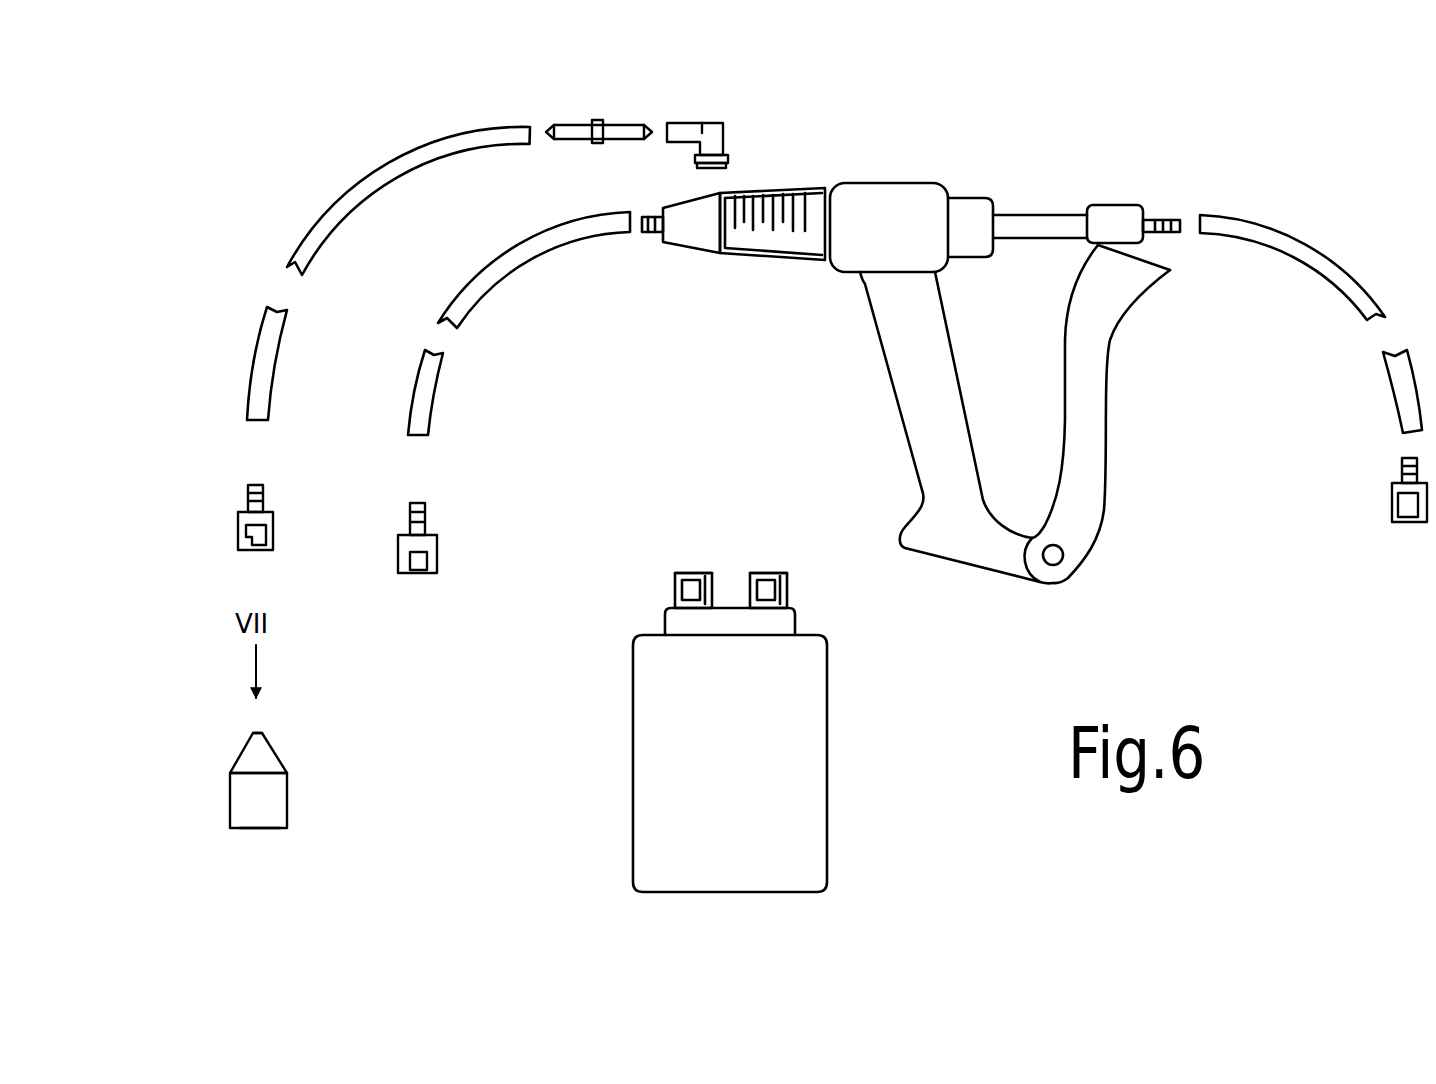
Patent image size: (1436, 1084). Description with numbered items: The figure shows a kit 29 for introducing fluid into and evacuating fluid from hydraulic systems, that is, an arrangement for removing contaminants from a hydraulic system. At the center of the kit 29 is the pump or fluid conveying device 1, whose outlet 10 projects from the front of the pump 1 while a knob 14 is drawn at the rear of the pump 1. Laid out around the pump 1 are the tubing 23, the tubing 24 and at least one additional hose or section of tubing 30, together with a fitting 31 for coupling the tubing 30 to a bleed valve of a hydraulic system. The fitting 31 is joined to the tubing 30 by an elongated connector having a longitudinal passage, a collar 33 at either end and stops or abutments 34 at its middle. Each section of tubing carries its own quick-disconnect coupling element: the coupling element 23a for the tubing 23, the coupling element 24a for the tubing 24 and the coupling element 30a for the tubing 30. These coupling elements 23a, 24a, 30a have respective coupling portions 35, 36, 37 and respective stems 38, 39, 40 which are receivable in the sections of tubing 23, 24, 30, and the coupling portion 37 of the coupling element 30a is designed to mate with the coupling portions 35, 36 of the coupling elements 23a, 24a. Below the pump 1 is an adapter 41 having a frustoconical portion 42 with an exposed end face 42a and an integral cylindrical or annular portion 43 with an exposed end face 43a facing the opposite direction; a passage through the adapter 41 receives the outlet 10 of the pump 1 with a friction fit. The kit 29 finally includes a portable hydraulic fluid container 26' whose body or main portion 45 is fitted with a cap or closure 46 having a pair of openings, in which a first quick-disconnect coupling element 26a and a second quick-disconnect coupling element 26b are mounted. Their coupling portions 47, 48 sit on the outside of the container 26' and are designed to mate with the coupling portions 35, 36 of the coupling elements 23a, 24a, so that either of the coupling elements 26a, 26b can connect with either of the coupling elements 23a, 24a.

The pump 1 is at (862, 378).
The outlet 10 is at (652, 236).
The plunger knob 14 is at (1168, 213).
The kit 29 is at (1368, 170).
The tubing 30 is at (300, 270).
The tubing 23 is at (462, 327).
The tubing 24 is at (1348, 316).
The collar 33 is at (548, 131).
The stops 34 is at (598, 120).
The fitting 31 is at (724, 135).
The quick-disconnect coupling element 30a is at (228, 563).
The coupling portion 37 is at (274, 534).
The stem 40 is at (264, 497).
The quick-disconnect coupling element 23a is at (447, 587).
The coupling portion 35 is at (438, 555).
The stem 38 is at (426, 512).
The quick-disconnect coupling element 24a is at (1378, 538).
The coupling portion 36 is at (1392, 508).
The stem 39 is at (1400, 466).
The adapter 41 is at (213, 848).
The frustoconical portion 42 is at (276, 749).
The end face 42a is at (253, 733).
The cylindrical portion 43 is at (289, 800).
The end face 43a is at (258, 830).
The hydraulic fluid container 26' is at (752, 733).
The body 45 is at (828, 740).
The cap 46 is at (797, 627).
The coupling portion 47 is at (673, 590).
The coupling portion 48 is at (787, 587).
The first quick-disconnect coupling element 26a is at (660, 560).
The second quick-disconnect coupling element 26b is at (792, 565).